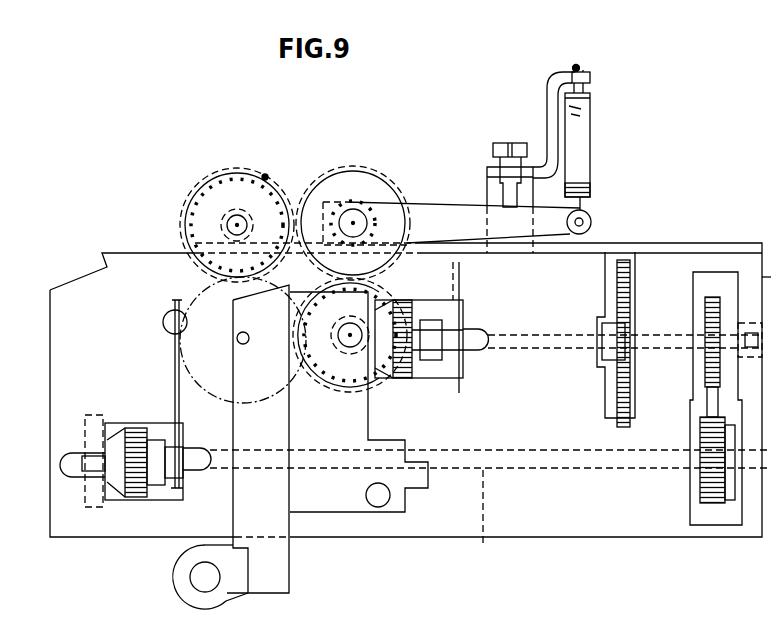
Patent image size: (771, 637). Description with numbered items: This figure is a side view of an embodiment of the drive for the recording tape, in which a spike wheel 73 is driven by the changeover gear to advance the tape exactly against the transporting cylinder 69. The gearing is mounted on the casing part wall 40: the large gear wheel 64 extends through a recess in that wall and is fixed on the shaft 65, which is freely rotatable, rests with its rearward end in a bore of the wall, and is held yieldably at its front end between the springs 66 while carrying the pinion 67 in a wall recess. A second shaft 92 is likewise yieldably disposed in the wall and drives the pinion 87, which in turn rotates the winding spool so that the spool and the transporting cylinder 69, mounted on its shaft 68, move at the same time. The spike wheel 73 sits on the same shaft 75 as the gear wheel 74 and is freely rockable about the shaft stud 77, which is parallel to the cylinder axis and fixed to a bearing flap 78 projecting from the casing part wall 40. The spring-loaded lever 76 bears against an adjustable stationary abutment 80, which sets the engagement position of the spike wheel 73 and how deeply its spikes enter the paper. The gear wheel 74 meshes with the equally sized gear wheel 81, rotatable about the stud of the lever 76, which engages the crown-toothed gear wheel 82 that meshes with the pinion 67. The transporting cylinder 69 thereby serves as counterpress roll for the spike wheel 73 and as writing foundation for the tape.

The casing part wall 40 is at (565, 523).
The large gear wheel 64 is at (622, 258).
The shaft 65 is at (535, 342).
The springs 66 is at (460, 302).
The pinion 67 is at (418, 378).
The shaft of the transporting cylinder 68 is at (237, 338).
The transporting cylinder 69 is at (193, 292).
The spike wheel 73 is at (226, 182).
The gear wheel 74 is at (265, 176).
The shaft 75 is at (237, 225).
The lever 76 is at (422, 215).
The shaft stud 77 is at (353, 223).
The bearing flap 78 is at (373, 240).
The adjustable stationary abutment 80 is at (505, 207).
The gear wheel 81 is at (337, 168).
The gear wheel 82 is at (390, 293).
The pinion 87 is at (135, 442).
The shaft 92 is at (484, 522).